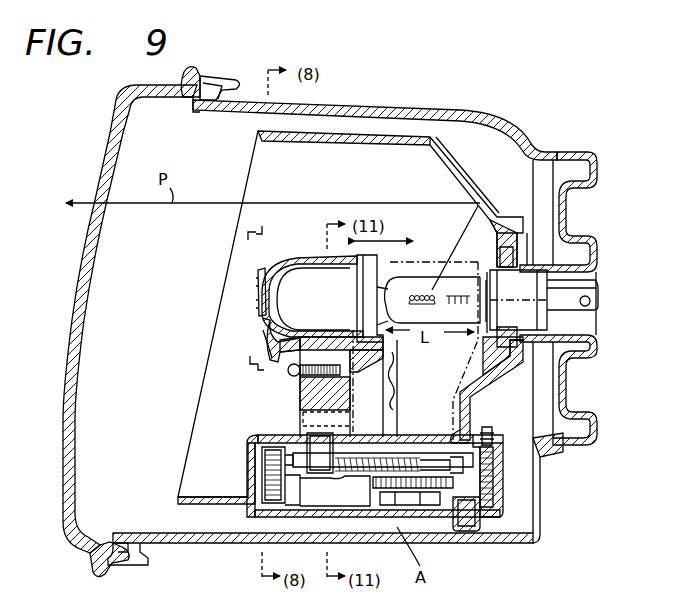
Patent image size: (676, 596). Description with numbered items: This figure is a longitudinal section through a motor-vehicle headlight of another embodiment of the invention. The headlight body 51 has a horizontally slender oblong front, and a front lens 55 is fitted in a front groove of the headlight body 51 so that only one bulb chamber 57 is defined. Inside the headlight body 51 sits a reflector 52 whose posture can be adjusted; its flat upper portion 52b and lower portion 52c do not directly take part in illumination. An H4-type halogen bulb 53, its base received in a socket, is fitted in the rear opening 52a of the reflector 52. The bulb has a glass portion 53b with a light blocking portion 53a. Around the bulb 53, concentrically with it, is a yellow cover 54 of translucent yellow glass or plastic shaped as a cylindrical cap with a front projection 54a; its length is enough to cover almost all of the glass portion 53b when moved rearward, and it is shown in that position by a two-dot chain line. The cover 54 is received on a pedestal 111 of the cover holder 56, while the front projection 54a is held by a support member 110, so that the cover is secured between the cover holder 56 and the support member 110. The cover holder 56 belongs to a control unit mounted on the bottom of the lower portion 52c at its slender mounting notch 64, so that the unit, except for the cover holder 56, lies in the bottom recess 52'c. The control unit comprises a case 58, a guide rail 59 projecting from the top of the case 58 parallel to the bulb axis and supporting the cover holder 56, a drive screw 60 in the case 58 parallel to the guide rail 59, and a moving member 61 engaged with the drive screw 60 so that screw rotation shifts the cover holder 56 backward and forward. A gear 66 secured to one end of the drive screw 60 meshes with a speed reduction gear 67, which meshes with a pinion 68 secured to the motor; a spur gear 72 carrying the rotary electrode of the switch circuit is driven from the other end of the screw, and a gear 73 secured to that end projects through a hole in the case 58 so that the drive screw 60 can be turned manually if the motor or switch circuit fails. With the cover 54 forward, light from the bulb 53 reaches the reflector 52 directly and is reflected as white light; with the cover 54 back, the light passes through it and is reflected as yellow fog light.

The headlight body 51 is at (429, 107).
The reflector 52 is at (218, 314).
The rear opening 52a is at (493, 278).
The upper portion 52b is at (355, 141).
The lower portion 52c is at (208, 495).
The bottom recess 52'c is at (206, 513).
The halogen bulb 53 is at (451, 328).
The light blocking portion 53a is at (388, 291).
The glass portion 53b is at (420, 287).
The yellow cover 54 is at (308, 256).
The front projection 54a is at (262, 291).
The front lens 55 is at (66, 384).
The cover holder 56 is at (298, 393).
The bulb chamber 57 is at (87, 458).
The case 58 is at (420, 445).
The guide rail 59 is at (441, 421).
The drive screw 60 is at (373, 455).
The moving member 61 is at (350, 513).
The mounting notch 64 is at (462, 428).
The gear 66 is at (280, 440).
The speed reduction gear 67 is at (263, 510).
The pinion 68 is at (247, 455).
The spur gear 72 is at (436, 528).
The gear 73 is at (494, 438).
The support member 110 is at (273, 344).
The pedestal 111 is at (318, 338).